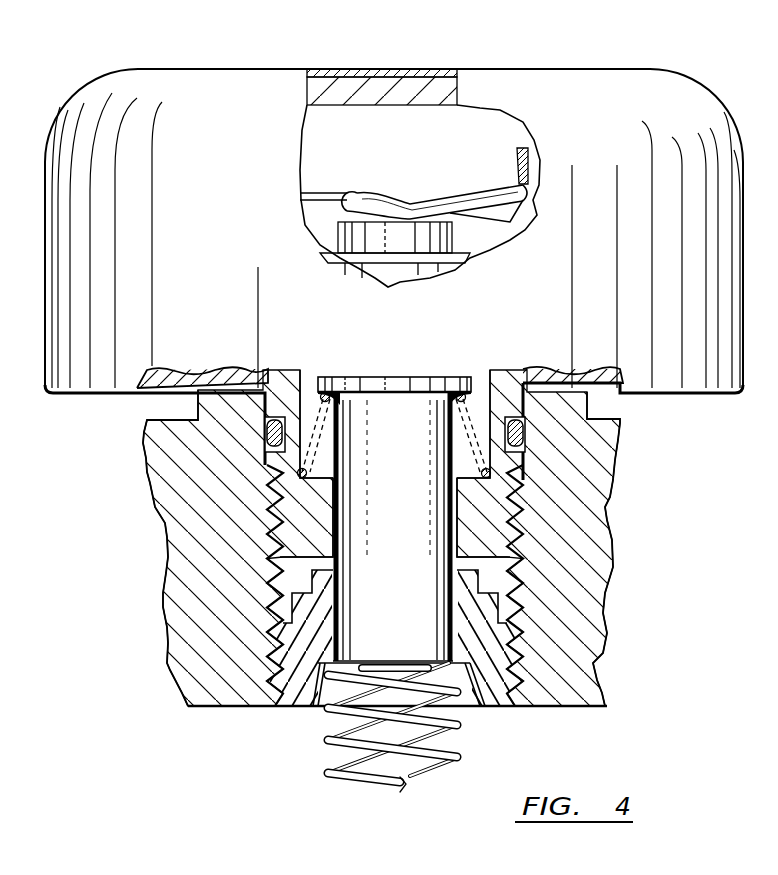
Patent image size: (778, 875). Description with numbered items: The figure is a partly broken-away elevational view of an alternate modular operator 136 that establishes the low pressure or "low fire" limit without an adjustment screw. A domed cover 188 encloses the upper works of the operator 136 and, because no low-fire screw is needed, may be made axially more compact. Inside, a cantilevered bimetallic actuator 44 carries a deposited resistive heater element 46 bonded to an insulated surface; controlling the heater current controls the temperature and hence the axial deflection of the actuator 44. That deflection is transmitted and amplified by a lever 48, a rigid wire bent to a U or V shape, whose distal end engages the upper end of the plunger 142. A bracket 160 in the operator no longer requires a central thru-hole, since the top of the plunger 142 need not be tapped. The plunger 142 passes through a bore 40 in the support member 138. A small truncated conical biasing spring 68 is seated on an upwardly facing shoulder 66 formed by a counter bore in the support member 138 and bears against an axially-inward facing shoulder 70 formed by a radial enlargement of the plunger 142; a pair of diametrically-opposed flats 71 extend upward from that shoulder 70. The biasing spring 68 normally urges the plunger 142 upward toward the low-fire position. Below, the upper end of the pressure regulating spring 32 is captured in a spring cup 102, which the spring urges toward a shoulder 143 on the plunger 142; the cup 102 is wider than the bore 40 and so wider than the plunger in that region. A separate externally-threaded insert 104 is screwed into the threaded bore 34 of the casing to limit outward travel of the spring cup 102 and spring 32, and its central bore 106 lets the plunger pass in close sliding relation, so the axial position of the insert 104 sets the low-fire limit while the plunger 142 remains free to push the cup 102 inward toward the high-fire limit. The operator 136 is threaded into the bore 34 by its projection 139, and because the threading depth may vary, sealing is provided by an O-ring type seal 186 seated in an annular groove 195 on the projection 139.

The operator 136 is at (603, 55).
The domed cover 188 is at (390, 69).
The bracket 160 is at (437, 106).
The bimetallic actuator 44 is at (322, 186).
The resistive heater element 46 is at (327, 206).
The lever 48 is at (478, 193).
The support member 138 is at (285, 376).
The axially-inward facing shoulder 70 is at (383, 397).
The plunger 142 is at (407, 398).
The flats 71 is at (480, 378).
The biasing spring 68 is at (458, 399).
The upwardly facing shoulder 66 is at (462, 472).
The bore 40 is at (340, 530).
The threaded bore 34 is at (270, 505).
The O-ring type seal 186 is at (525, 434).
The annular groove 195 is at (525, 468).
The projection 139 is at (515, 528).
The central bore 106 is at (455, 612).
The shoulder 143 is at (390, 663).
The externally-threaded insert 104 is at (298, 703).
The spring cup 102 is at (311, 707).
The pressure regulating spring 32 is at (460, 758).